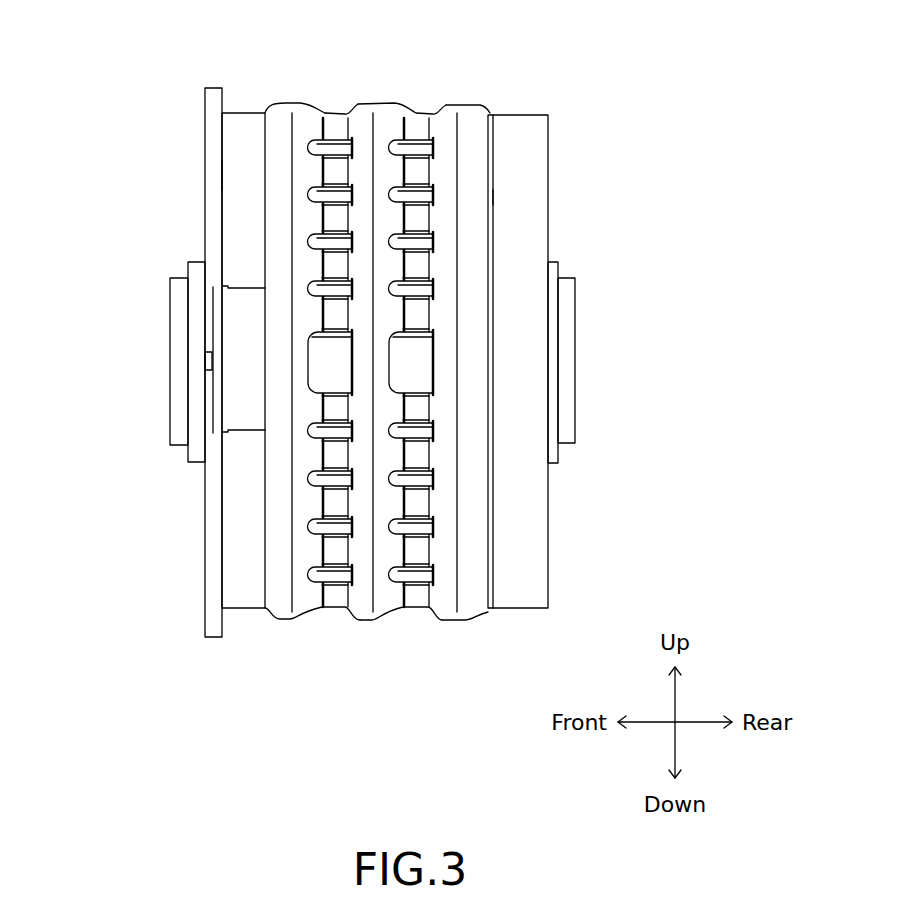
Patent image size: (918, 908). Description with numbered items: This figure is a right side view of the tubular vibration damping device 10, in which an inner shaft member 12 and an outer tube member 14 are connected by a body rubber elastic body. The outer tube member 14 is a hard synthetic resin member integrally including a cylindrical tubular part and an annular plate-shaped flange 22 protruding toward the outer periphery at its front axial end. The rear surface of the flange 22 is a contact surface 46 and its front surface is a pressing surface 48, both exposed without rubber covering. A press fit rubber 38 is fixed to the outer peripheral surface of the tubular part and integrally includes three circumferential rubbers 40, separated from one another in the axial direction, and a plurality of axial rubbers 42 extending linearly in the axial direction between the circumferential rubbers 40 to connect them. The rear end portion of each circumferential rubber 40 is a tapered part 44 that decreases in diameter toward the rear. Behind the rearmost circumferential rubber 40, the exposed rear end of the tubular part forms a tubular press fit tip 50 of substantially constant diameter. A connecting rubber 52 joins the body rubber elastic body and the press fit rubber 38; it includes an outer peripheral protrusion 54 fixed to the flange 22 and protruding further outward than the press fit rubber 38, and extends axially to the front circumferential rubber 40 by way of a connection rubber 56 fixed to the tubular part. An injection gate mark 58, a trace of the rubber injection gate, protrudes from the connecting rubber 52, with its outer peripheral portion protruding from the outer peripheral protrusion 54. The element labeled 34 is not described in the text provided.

The tubular vibration damping device 10 is at (562, 74).
The inner shaft member 12 is at (598, 373).
The outer tube member 14 is at (558, 156).
The flange 22 is at (215, 143).
The flange 34 is at (558, 447).
The press fit rubber 38 is at (268, 98).
The circumferential rubber 40 is at (396, 403).
The axial rubber 42 is at (337, 145).
The tapered part 44 is at (307, 118).
The contact surface 46 is at (223, 166).
The pressing surface 48 is at (205, 113).
The press fit tip 50 is at (522, 198).
The connecting rubber 52 is at (210, 419).
The outer peripheral protrusion 54 is at (220, 320).
The connection rubber 56 is at (245, 393).
The injection gate mark 58 is at (130, 354).